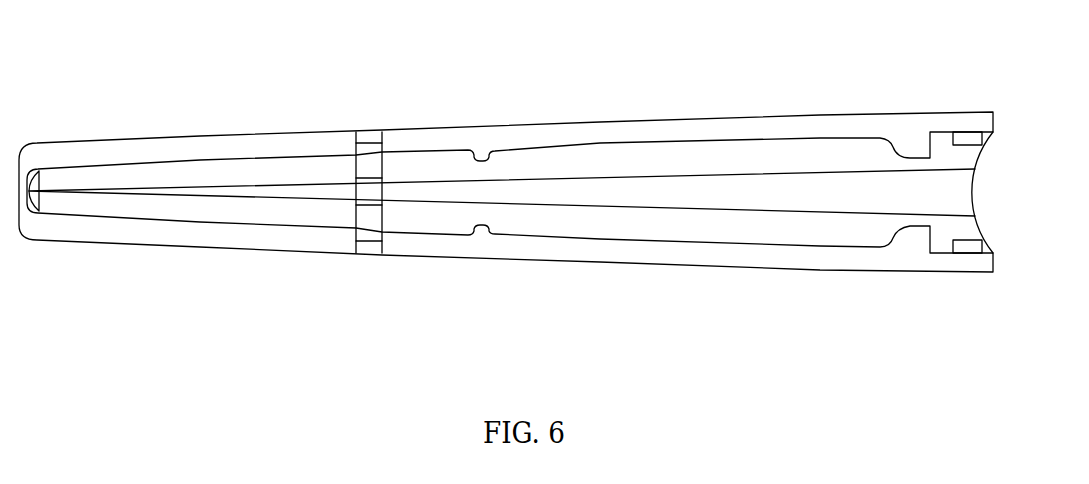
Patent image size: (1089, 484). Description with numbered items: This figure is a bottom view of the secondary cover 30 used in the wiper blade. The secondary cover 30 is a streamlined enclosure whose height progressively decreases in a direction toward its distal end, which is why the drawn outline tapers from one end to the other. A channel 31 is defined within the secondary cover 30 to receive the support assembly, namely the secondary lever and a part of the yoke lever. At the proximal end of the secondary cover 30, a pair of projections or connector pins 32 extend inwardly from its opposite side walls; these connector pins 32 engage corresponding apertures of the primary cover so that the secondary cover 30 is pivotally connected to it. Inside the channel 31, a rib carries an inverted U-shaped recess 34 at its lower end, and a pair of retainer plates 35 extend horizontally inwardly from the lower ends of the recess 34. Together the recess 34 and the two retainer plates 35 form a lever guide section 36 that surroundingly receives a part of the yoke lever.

The secondary cover 30 is at (592, 121).
The channel 31 is at (700, 164).
The connector pins 32 is at (968, 146).
The recess 34 is at (371, 187).
The retainer plates 35 is at (356, 167).
The lever guide section 36 is at (392, 170).